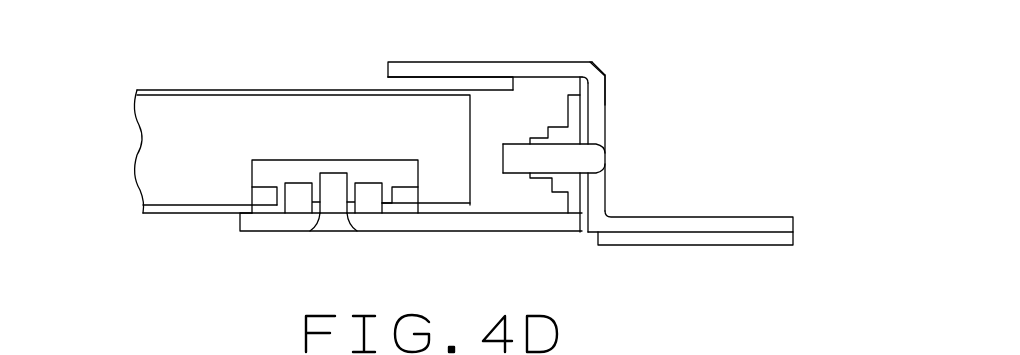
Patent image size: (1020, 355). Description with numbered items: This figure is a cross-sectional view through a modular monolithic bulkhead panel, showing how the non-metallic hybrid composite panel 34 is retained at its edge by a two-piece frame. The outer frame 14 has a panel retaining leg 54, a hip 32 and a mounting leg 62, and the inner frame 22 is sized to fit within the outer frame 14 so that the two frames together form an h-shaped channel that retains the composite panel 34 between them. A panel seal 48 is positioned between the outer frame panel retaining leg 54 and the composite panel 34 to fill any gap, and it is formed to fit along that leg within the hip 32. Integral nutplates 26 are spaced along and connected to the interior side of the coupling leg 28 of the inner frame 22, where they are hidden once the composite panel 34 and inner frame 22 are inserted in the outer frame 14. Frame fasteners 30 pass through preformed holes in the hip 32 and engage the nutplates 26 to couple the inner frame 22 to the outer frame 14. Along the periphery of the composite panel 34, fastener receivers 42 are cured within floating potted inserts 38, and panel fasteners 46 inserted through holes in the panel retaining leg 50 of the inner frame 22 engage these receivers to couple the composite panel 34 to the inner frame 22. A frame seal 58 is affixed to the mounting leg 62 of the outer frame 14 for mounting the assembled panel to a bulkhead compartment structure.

The outer frame 14 is at (605, 72).
The inner frame 22 is at (565, 222).
The integral nutplates 26 is at (562, 133).
The coupling leg 28 is at (582, 76).
The frame fasteners 30 is at (592, 158).
The hip 32 is at (600, 107).
The composite panel 34 is at (168, 133).
The floating potted inserts 38 is at (265, 168).
The fastener receivers 42 is at (301, 202).
The panel fasteners 46 is at (337, 216).
The panel seal 48 is at (413, 83).
The panel retaining leg 50 is at (433, 233).
The panel retaining leg 54 is at (487, 62).
The frame seal 58 is at (707, 238).
The mounting leg 62 is at (748, 225).